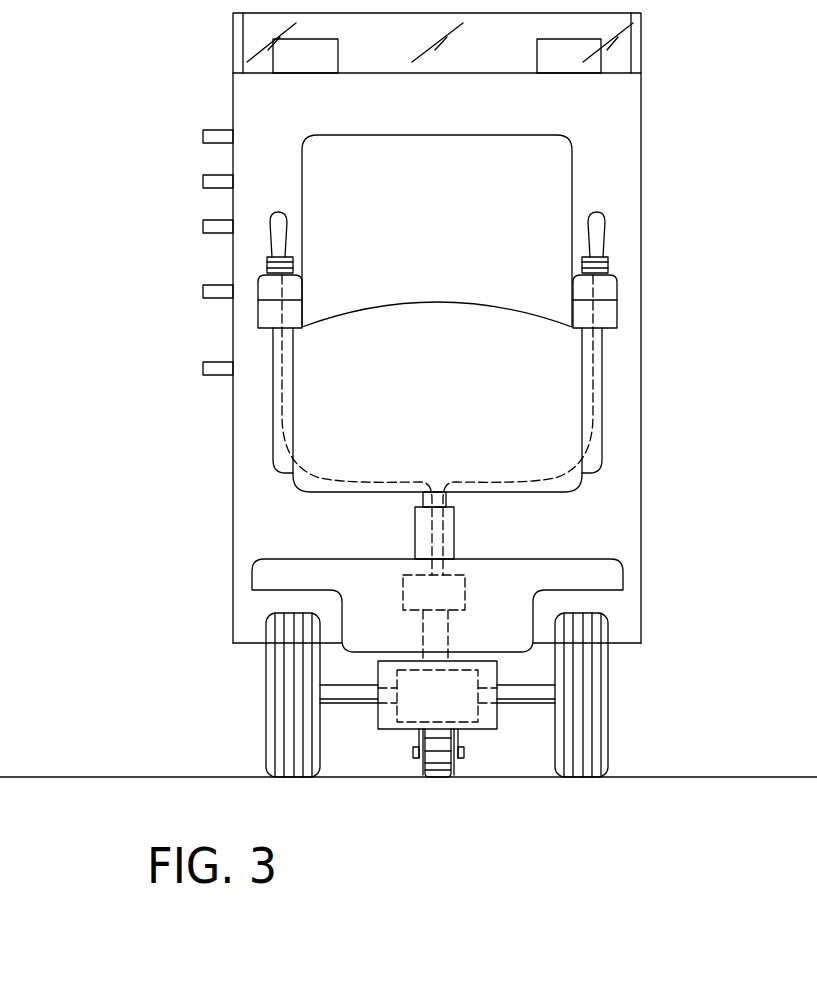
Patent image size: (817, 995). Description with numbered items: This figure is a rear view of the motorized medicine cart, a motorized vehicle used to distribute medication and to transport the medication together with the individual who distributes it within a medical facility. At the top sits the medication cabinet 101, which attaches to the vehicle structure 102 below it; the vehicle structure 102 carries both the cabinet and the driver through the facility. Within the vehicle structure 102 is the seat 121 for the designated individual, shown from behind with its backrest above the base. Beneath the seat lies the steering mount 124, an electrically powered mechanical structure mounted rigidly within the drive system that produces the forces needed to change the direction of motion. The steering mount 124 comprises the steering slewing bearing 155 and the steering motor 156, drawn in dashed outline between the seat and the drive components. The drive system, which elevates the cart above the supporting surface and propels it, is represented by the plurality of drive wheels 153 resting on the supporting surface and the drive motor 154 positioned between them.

The medication cabinet 101 is at (598, 108).
The vehicle structure 102 is at (243, 92).
The seat 121 is at (515, 190).
The steering mount 124 is at (515, 612).
The drive wheels 153 is at (575, 770).
The drive motor 154 is at (463, 690).
The steering slewing bearing 155 is at (440, 629).
The steering motor 156 is at (453, 580).